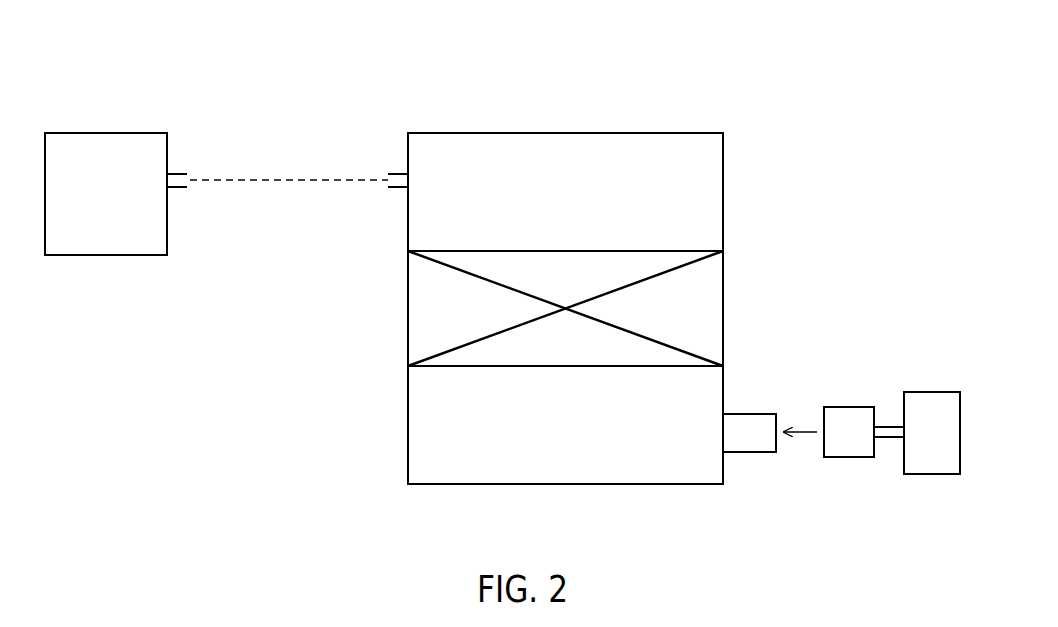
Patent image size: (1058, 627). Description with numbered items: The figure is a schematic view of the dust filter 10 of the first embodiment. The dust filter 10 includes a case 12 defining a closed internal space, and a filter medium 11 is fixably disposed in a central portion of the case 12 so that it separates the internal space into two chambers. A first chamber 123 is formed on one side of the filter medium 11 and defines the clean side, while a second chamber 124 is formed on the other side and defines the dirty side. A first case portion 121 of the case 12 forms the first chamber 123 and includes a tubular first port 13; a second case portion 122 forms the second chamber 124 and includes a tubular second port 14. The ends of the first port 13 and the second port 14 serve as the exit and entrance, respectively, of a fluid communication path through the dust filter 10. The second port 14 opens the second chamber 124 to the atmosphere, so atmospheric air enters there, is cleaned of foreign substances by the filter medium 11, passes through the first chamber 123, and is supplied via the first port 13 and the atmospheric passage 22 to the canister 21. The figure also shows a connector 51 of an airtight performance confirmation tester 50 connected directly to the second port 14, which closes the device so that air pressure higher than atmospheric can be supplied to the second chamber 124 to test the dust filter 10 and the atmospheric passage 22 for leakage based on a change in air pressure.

The dust filter 10 is at (656, 104).
The filter medium 11 is at (668, 251).
The case 12 is at (727, 160).
The first case portion 121 is at (565, 133).
The second case portion 122 is at (533, 485).
The first chamber 123 is at (490, 134).
The second chamber 124 is at (628, 483).
The first port 13 is at (400, 173).
The second port 14 is at (754, 414).
The canister 21 is at (101, 133).
The atmospheric passage 22 is at (226, 180).
The airtight performance confirmation tester 50 is at (930, 392).
The connector 51 is at (848, 407).